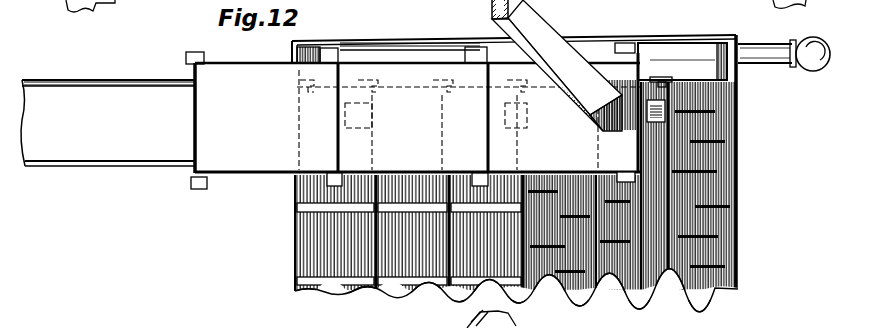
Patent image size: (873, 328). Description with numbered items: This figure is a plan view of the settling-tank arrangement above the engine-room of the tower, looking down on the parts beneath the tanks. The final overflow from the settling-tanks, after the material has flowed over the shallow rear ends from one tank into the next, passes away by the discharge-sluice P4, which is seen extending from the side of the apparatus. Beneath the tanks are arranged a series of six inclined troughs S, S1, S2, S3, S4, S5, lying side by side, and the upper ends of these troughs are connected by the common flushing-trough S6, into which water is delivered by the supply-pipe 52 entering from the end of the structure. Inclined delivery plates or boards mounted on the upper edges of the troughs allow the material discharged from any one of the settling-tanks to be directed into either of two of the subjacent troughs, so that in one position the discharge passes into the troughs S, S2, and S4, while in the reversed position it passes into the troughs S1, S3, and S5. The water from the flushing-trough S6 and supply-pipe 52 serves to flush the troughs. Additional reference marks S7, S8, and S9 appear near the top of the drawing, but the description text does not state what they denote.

The discharge-sluice P4 is at (108, 123).
The inclined trough S is at (707, 284).
The inclined trough S1 is at (638, 284).
The inclined trough S2 is at (575, 284).
The inclined trough S3 is at (500, 292).
The inclined trough S4 is at (420, 290).
The inclined trough S5 is at (352, 290).
The common flushing-trough S6 is at (680, 46).
The shoe part S7 is at (356, 64).
The shoe part S8 is at (422, 48).
The shoe part S9 is at (484, 64).
The supply-pipe 52 is at (784, 68).